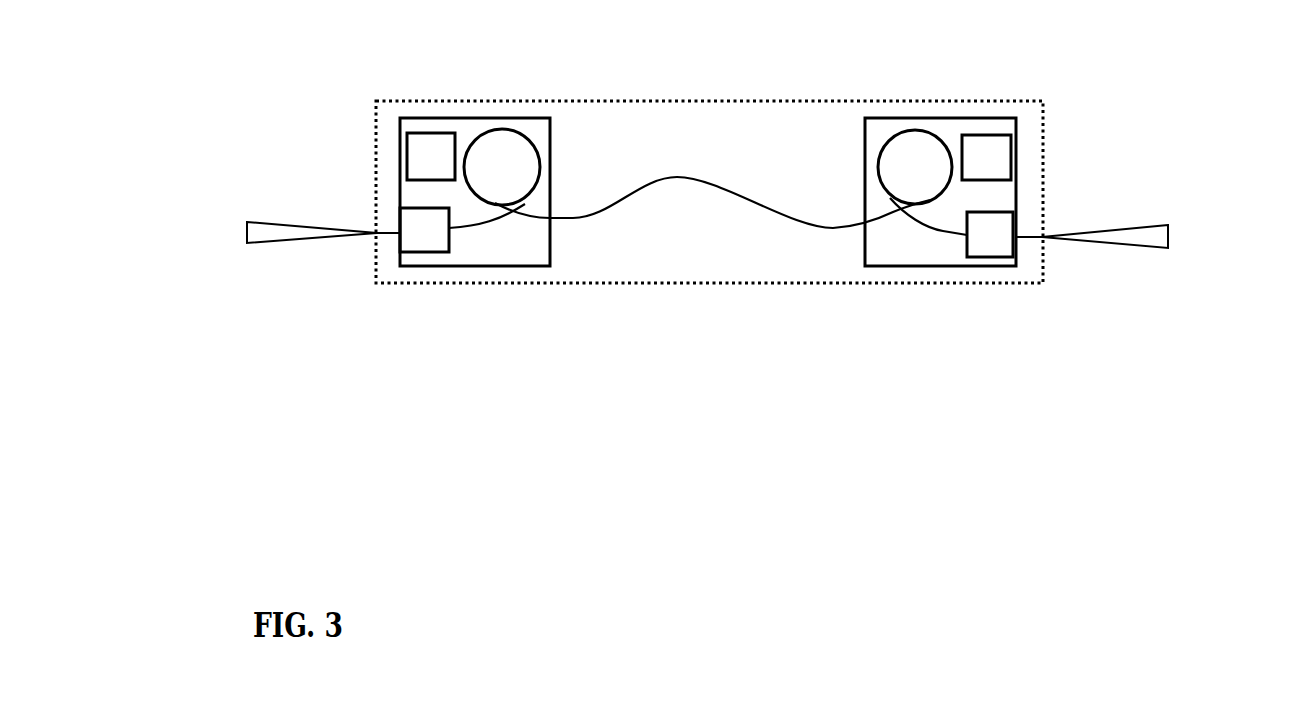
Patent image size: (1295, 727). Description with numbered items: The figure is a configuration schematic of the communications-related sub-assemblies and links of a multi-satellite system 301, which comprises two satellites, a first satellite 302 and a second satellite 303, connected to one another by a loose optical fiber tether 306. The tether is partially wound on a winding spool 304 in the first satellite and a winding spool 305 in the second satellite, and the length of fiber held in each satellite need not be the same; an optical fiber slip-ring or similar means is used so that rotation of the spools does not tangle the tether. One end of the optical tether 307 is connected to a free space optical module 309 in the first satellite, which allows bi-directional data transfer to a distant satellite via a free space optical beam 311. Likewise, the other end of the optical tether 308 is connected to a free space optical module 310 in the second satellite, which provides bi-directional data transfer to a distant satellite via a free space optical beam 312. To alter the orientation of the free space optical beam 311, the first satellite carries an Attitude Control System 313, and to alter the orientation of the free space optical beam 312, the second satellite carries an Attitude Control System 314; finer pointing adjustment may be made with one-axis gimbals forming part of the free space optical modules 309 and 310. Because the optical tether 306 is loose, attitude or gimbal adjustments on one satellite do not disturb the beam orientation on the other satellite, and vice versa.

The multi-satellite system 301 is at (589, 99).
The first satellite 302 is at (407, 114).
The second satellite 303 is at (939, 116).
The winding spool 304 is at (497, 121).
The winding spool 305 is at (879, 144).
The loose optical fiber tether 306 is at (683, 187).
The end of the optical tether 307 is at (473, 232).
The other end of the optical tether 308 is at (947, 240).
The free space optical module 309 is at (419, 255).
The free space optical module 310 is at (998, 259).
The free space optical beam 311 is at (279, 245).
The free space optical beam 312 is at (1146, 250).
The Attitude Control System 313 is at (424, 158).
The Attitude Control System 314 is at (997, 159).